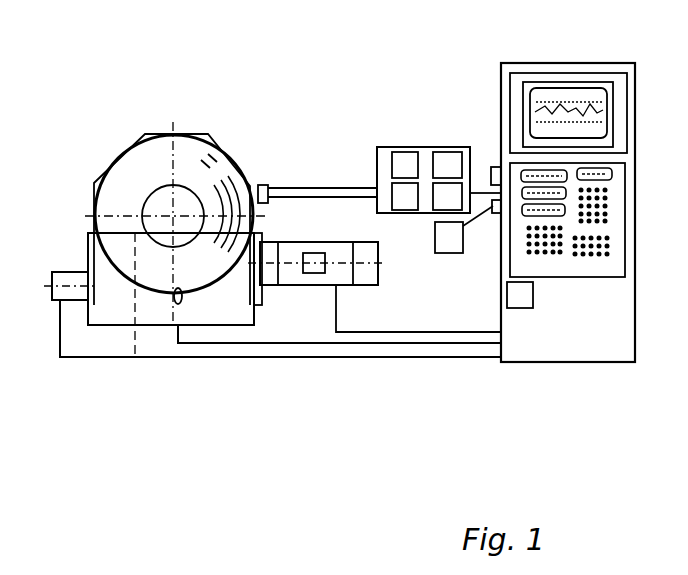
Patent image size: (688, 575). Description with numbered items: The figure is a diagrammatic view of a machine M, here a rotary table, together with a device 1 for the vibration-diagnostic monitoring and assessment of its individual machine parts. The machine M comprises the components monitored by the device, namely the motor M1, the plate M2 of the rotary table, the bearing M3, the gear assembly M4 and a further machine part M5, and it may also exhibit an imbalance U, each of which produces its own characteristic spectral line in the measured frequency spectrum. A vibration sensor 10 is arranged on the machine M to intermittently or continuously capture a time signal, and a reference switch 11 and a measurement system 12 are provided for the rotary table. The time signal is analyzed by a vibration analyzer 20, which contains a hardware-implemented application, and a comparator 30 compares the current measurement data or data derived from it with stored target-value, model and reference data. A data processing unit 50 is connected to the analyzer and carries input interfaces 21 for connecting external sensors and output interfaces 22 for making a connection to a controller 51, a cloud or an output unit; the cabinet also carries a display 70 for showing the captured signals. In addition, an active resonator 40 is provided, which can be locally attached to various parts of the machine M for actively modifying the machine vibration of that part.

The device 1 is at (333, 139).
The vibration sensor 10 is at (264, 186).
The reference switch 11 is at (182, 300).
The measurement system 12 is at (66, 272).
The vibration analyzer 20 is at (441, 147).
The input interfaces 21 is at (269, 189).
The output interfaces 22 is at (268, 198).
The comparator 30 is at (447, 196).
The active resonator 40 is at (313, 273).
The data processing unit 50 is at (618, 298).
The controller 51 is at (464, 229).
The display 70 is at (565, 98).
The machine M is at (117, 317).
The motor M1 is at (336, 262).
The plate M2 is at (110, 190).
The bearing M3 is at (207, 134).
The gear assembly M4 is at (265, 275).
The machine part M5 is at (172, 207).
The imbalance U is at (146, 198).